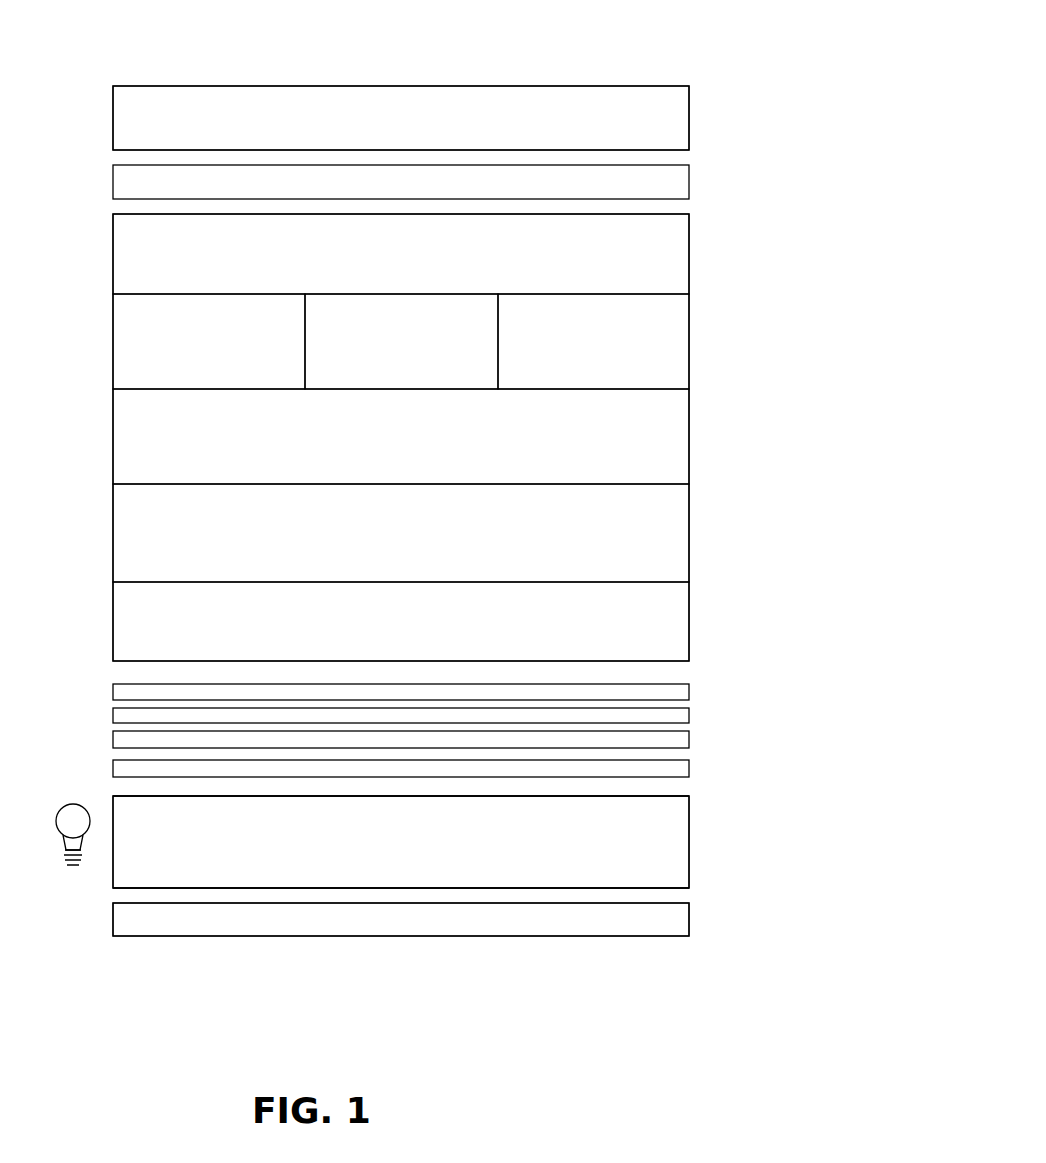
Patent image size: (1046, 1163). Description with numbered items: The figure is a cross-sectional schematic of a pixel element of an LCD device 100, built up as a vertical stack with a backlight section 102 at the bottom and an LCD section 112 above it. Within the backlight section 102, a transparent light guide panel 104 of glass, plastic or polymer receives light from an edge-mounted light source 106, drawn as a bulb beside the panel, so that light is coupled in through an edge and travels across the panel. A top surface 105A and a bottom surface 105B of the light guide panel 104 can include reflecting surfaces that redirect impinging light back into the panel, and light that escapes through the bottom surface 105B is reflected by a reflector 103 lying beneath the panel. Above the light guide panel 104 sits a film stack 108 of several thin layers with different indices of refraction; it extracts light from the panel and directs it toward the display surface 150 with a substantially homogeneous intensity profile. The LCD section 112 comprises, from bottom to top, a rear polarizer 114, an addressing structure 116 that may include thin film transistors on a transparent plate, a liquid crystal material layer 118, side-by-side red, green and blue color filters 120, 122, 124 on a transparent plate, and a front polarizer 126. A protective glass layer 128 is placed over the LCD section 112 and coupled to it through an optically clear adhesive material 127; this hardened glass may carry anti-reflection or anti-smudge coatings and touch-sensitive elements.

The LCD device 100 is at (609, 69).
The backlight section 102 is at (757, 796).
The reflector 103 is at (527, 938).
The light guide panel 104 is at (401, 842).
The top surface 105A is at (658, 794).
The bottom surface 105B is at (658, 889).
The light source 106 is at (73, 868).
The film stack 108 is at (757, 684).
The LCD section 112 is at (757, 214).
The rear polarizer 114 is at (401, 621).
The addressing structure 116 is at (401, 533).
The liquid crystal material layer 118 is at (401, 436).
The red color filter 120 is at (209, 341).
The green color filter 122 is at (401, 341).
The blue color filter 124 is at (593, 341).
The front polarizer 126 is at (401, 254).
The optically clear adhesive material 127 is at (401, 182).
The protective glass layer 128 is at (401, 118).
The display surface 150 is at (368, 86).